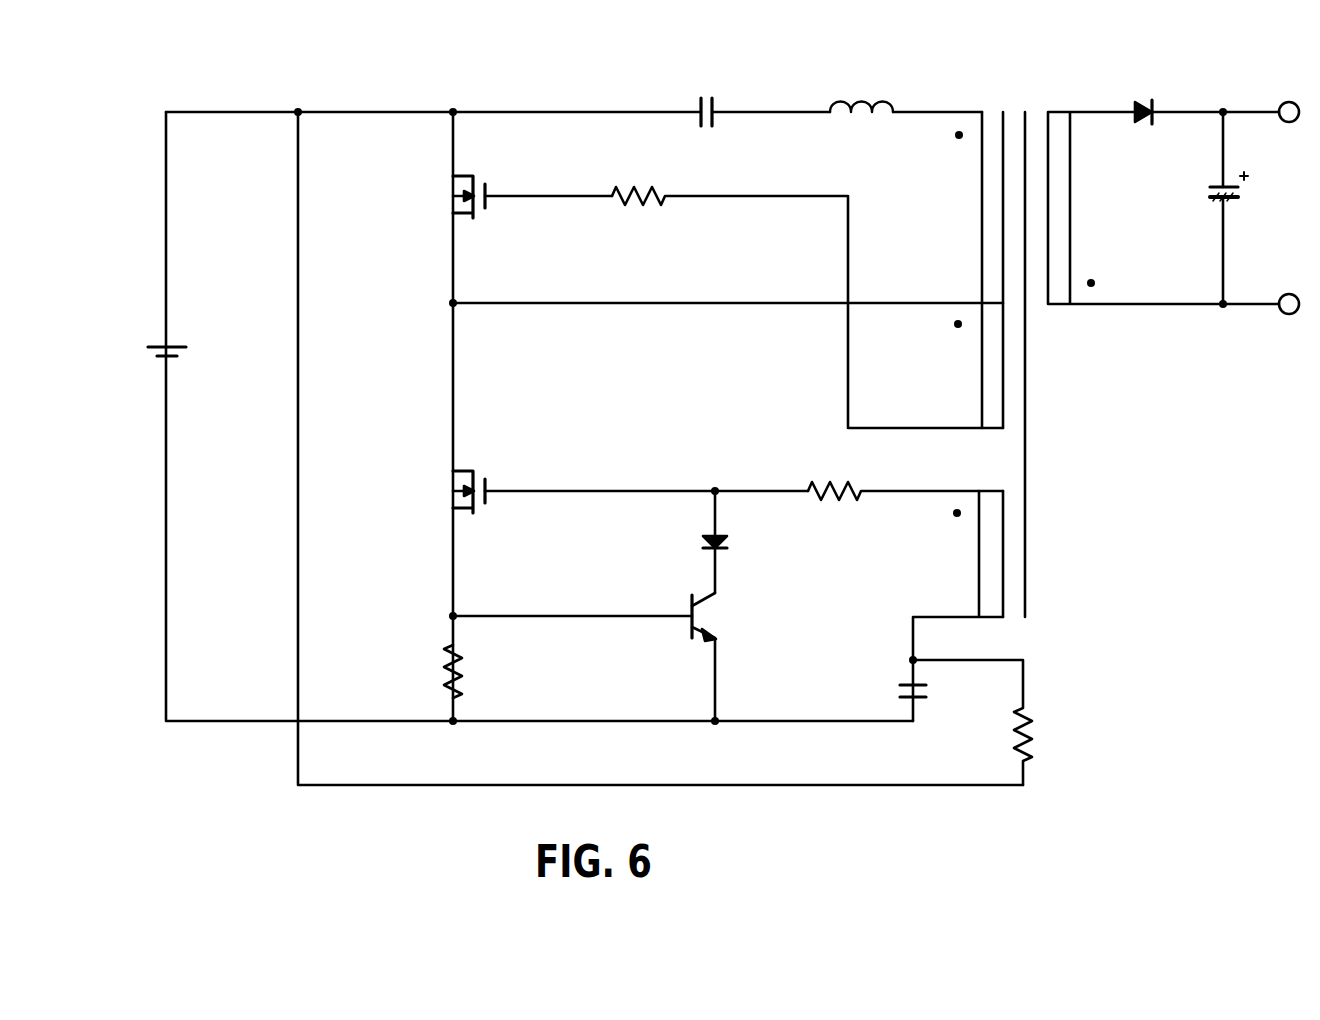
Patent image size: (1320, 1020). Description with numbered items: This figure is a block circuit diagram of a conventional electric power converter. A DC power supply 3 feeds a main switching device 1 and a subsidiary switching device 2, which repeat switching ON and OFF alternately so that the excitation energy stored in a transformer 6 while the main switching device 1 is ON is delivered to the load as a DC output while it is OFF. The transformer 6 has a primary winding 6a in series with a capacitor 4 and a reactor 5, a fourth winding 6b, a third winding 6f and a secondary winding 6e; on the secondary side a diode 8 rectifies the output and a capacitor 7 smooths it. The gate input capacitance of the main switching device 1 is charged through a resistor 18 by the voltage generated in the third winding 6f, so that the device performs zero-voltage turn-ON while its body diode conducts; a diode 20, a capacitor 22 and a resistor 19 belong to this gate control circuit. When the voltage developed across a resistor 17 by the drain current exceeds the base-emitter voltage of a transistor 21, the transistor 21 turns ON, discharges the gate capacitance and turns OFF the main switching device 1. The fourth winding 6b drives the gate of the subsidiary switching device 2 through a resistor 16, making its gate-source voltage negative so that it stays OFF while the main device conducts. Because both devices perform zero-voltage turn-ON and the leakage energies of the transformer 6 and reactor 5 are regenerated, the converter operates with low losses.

The main switching device 1 is at (435, 500).
The subsidiary switching device 2 is at (437, 190).
The DC power supply 3 is at (148, 335).
The capacitor 4 is at (707, 81).
The reactor 5 is at (870, 80).
The transformer 6 is at (1032, 82).
The primary winding 6a is at (978, 228).
The fourth winding 6b is at (975, 394).
The secondary winding 6e is at (1068, 173).
The third winding 6f is at (973, 595).
The capacitor 7 is at (1245, 190).
The diode 8 is at (1140, 82).
The resistor 16 is at (655, 208).
The resistor 17 is at (433, 667).
The resistor 18 is at (812, 485).
The resistor 19 is at (1047, 745).
The diode 20 is at (740, 540).
The transistor 21 is at (740, 615).
The capacitor 22 is at (885, 687).